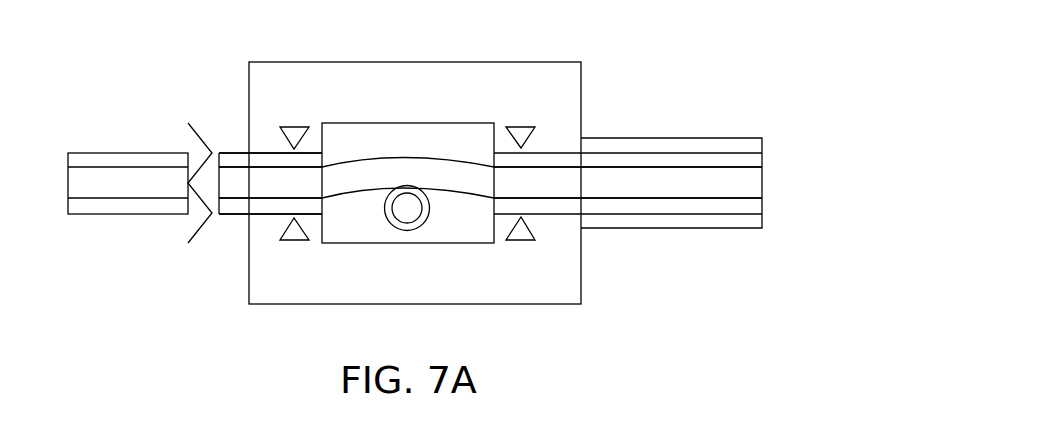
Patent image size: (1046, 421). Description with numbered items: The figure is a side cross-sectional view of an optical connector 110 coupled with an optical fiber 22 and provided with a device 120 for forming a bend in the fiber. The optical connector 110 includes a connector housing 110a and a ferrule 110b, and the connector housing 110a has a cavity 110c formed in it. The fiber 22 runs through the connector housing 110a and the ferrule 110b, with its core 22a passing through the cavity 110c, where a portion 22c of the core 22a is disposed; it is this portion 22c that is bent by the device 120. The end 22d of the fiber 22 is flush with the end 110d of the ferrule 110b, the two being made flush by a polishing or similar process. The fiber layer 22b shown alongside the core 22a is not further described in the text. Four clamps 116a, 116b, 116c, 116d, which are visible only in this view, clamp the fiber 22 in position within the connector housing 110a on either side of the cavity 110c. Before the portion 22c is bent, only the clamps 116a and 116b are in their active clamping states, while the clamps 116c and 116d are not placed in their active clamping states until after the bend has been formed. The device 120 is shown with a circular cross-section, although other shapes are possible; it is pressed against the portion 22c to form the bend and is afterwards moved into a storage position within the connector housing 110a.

The optical connector 110 is at (672, 27).
The connector housing 110a is at (490, 62).
The ferrule 110b is at (648, 137).
The cavity 110c is at (369, 123).
The end of ferrule 110d is at (762, 217).
The optical fiber 22 is at (547, 152).
The core 22a is at (272, 175).
The cable lower layer 22b is at (257, 205).
The portion of the core 22c is at (406, 158).
The end of the fiber 22d is at (762, 183).
The device 120 is at (407, 208).
The clamp 116a is at (521, 126).
The clamp 116b is at (521, 241).
The clamp 116c is at (294, 126).
The clamp 116d is at (294, 241).